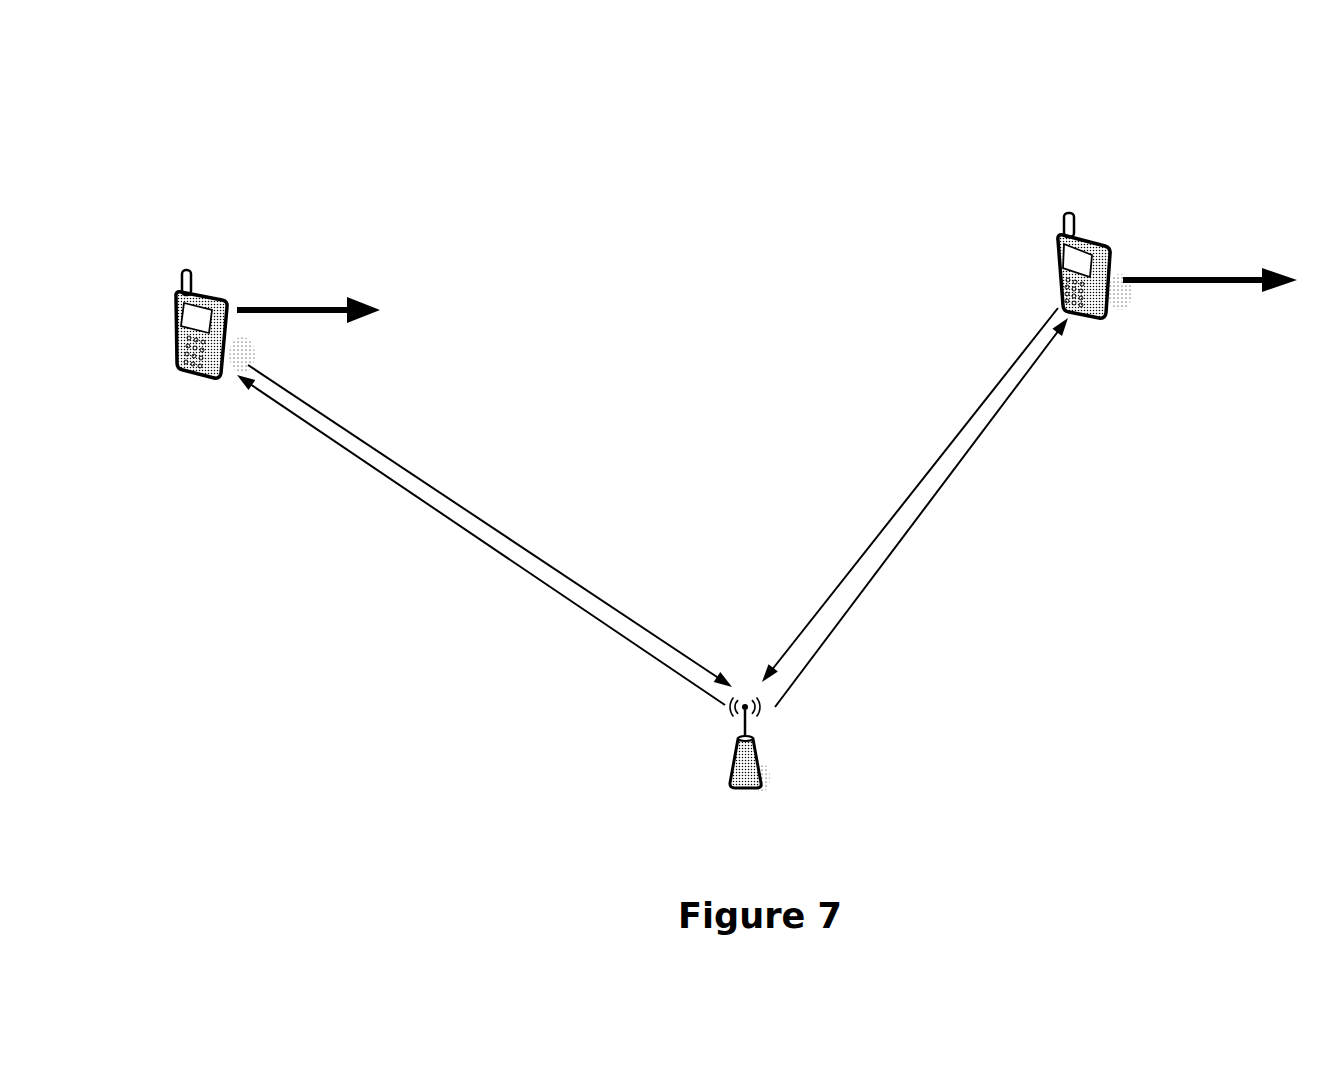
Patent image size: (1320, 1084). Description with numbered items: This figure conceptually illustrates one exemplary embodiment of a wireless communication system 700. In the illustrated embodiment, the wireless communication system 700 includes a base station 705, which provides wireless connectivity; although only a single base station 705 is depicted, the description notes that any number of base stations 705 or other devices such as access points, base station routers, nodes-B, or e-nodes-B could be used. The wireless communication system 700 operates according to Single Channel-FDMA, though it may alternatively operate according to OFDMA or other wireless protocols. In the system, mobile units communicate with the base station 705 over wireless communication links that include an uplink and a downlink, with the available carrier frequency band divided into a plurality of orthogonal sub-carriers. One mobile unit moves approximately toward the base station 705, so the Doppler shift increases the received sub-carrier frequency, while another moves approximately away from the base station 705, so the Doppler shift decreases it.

The wireless communication system 700 is at (1210, 114).
The base station 705 is at (748, 789).